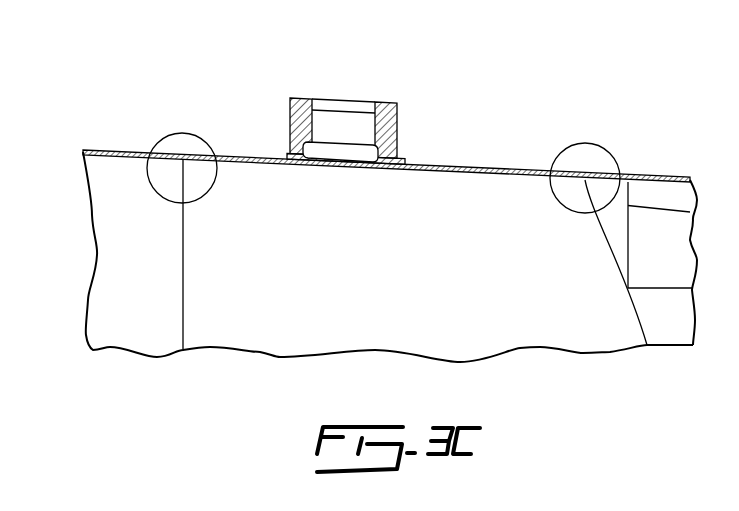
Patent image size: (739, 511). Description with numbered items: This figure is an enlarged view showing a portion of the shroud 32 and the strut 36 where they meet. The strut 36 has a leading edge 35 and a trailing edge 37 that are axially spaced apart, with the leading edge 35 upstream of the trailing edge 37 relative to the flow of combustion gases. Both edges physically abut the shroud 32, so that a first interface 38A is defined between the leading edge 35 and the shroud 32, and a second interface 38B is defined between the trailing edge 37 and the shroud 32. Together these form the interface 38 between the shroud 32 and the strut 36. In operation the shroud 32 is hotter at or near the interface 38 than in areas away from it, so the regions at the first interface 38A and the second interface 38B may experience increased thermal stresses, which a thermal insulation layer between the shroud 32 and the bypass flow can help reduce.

The shroud 32 is at (122, 150).
The leading edge 35 is at (187, 285).
The strut 36 is at (291, 249).
The trailing edge 37 is at (637, 318).
The interface 38 is at (583, 140).
The first interface 38A is at (181, 128).
The second interface 38B is at (588, 140).